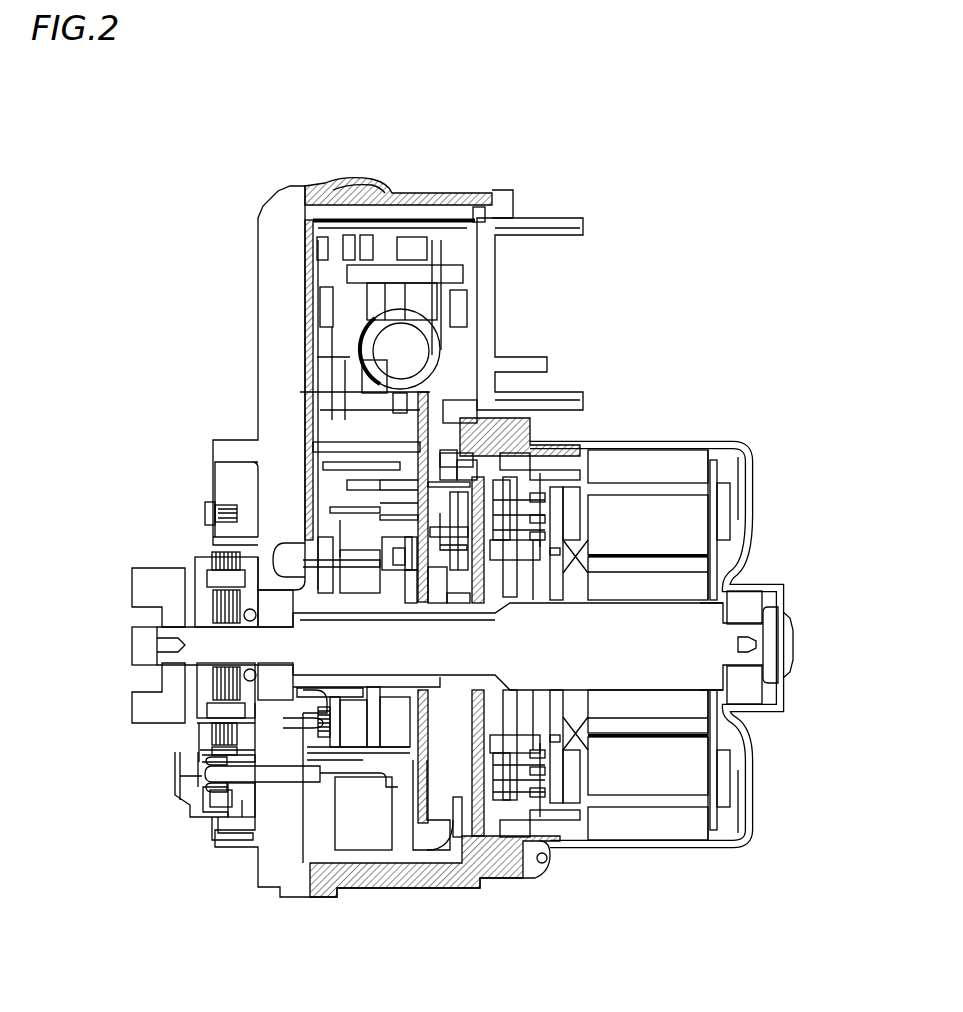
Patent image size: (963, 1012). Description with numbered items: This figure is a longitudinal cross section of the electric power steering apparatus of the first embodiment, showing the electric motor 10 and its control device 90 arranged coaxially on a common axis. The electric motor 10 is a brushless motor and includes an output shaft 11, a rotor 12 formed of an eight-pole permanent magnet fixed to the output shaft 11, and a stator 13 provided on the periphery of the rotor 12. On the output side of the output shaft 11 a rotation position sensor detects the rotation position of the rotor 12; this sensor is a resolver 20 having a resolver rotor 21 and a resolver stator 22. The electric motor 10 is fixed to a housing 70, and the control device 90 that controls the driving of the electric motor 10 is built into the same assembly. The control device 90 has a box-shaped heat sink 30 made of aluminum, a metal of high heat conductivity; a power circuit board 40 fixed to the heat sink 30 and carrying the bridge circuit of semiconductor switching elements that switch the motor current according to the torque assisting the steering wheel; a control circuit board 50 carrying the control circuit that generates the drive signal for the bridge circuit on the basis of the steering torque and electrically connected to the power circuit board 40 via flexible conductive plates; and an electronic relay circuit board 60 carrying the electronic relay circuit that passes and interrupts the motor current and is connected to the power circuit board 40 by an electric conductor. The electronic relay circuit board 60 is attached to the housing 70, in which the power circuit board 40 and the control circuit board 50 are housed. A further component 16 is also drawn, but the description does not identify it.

The electric motor 10 is at (692, 525).
The output shaft 11 is at (170, 658).
The rotor 12 is at (697, 723).
The stator 13 is at (690, 777).
The brush unit 16 is at (512, 777).
The resolver 20 is at (217, 622).
The resolver rotor 21 is at (213, 675).
The resolver stator 22 is at (197, 728).
The heat sink 30 is at (290, 210).
The power circuit board 40 is at (305, 308).
The control circuit board 50 is at (428, 468).
The electronic relay circuit board 60 is at (477, 798).
The housing 70 is at (370, 880).
The control device 90 is at (392, 248).